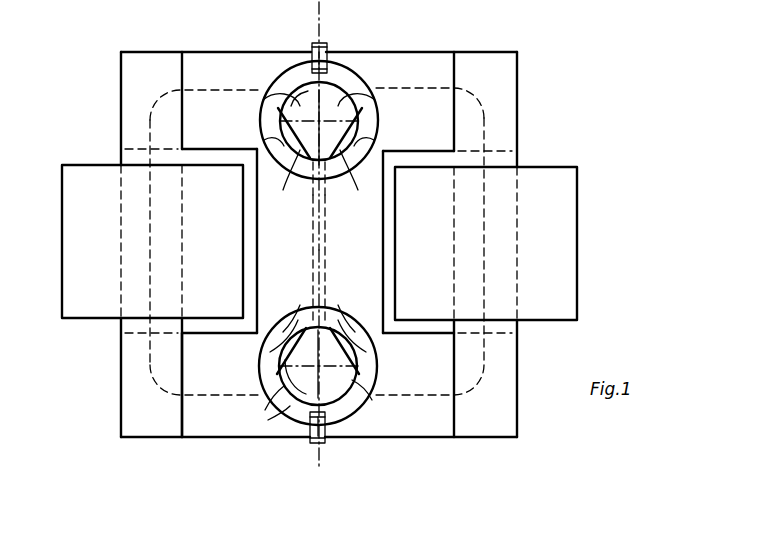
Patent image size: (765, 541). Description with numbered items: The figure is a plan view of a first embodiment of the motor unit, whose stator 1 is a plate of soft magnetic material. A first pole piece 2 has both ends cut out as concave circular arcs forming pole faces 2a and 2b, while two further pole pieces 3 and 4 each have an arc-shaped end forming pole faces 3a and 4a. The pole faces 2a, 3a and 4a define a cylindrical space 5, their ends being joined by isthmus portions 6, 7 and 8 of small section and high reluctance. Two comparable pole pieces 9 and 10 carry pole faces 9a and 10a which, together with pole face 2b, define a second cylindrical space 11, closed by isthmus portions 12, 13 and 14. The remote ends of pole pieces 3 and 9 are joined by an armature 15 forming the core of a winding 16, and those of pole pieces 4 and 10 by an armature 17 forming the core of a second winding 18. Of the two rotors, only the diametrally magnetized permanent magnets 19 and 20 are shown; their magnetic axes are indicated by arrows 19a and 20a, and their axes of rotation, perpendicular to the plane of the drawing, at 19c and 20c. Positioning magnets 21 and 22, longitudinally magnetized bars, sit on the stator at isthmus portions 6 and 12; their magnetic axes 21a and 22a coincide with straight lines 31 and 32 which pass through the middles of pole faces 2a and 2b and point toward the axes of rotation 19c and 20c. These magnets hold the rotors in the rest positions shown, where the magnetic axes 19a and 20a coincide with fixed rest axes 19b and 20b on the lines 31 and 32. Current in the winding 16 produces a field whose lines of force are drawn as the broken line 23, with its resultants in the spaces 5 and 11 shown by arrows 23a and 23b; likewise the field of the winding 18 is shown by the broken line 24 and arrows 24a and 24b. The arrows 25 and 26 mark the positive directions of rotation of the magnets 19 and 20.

The stator 1 is at (502, 454).
The first pole piece 2 is at (384, 247).
The pole face 2a is at (310, 185).
The pole face 2b is at (315, 322).
The pole piece 3 is at (182, 52).
The pole face 3a is at (193, 67).
The pole piece 4 is at (417, 67).
The pole face 4a is at (352, 70).
The cylindrical space 5 is at (364, 92).
The isthmus portion 6 is at (328, 56).
The isthmus portion 7 is at (272, 150).
The isthmus portion 8 is at (380, 145).
The pole piece 9 is at (182, 438).
The pole face 9a is at (195, 425).
The pole piece 10 is at (430, 440).
The pole face 10a is at (368, 380).
The second cylindrical space 11 is at (283, 408).
The isthmus portion 12 is at (300, 440).
The isthmus portion 13 is at (258, 338).
The isthmus portion 14 is at (352, 328).
The armature 15 is at (130, 73).
The winding 16 is at (62, 244).
The armature 17 is at (492, 92).
The second winding 18 is at (577, 254).
The permanent magnet 19 is at (366, 104).
The magnetic axis 19a is at (293, 111).
The rest axis 19b is at (293, 111).
The axis of rotation 19c is at (330, 183).
The permanent magnet 20 is at (270, 365).
The magnetic axis 20a is at (363, 394).
The rest axis 20b is at (363, 394).
The axis of rotation 20c is at (372, 366).
The positioning magnet 21 is at (310, 45).
The magnetic axis 21a is at (308, 53).
The positioning magnet 22 is at (321, 445).
The magnetic axis 22a is at (328, 442).
The broken line 23 is at (150, 130).
The arrow 23a is at (300, 172).
The arrow 23b is at (300, 310).
The broken line 24 is at (485, 130).
The arrow 24a is at (352, 172).
The arrow 24b is at (343, 312).
The arrow 25 is at (282, 88).
The arrow 26 is at (263, 402).
The straight line 31 is at (342, 28).
The straight line 32 is at (318, 465).